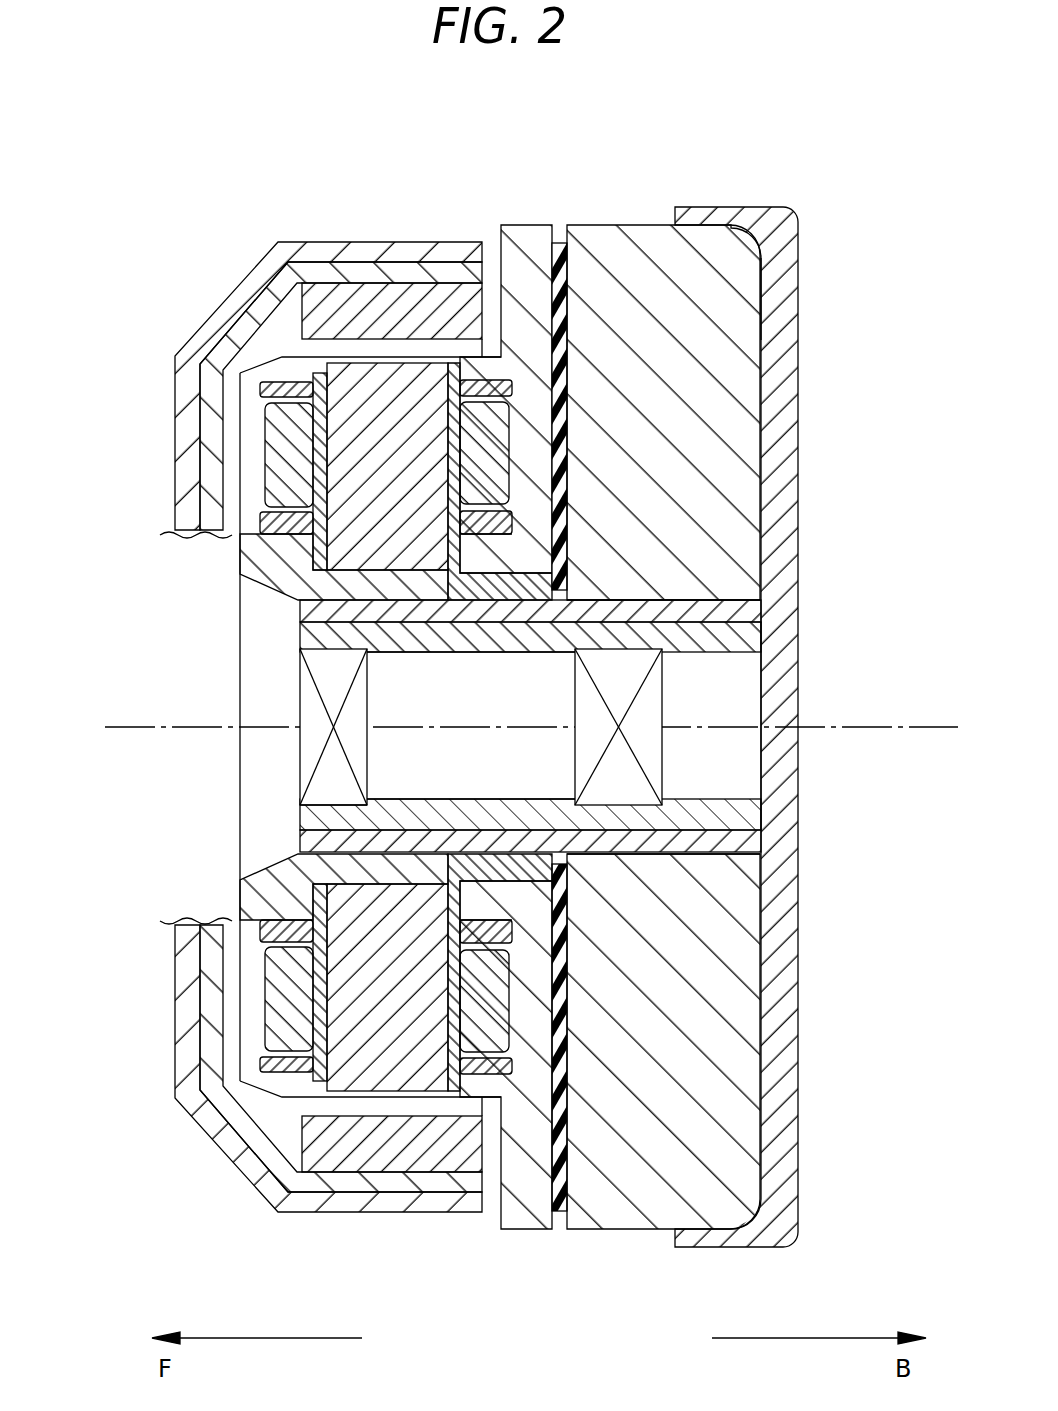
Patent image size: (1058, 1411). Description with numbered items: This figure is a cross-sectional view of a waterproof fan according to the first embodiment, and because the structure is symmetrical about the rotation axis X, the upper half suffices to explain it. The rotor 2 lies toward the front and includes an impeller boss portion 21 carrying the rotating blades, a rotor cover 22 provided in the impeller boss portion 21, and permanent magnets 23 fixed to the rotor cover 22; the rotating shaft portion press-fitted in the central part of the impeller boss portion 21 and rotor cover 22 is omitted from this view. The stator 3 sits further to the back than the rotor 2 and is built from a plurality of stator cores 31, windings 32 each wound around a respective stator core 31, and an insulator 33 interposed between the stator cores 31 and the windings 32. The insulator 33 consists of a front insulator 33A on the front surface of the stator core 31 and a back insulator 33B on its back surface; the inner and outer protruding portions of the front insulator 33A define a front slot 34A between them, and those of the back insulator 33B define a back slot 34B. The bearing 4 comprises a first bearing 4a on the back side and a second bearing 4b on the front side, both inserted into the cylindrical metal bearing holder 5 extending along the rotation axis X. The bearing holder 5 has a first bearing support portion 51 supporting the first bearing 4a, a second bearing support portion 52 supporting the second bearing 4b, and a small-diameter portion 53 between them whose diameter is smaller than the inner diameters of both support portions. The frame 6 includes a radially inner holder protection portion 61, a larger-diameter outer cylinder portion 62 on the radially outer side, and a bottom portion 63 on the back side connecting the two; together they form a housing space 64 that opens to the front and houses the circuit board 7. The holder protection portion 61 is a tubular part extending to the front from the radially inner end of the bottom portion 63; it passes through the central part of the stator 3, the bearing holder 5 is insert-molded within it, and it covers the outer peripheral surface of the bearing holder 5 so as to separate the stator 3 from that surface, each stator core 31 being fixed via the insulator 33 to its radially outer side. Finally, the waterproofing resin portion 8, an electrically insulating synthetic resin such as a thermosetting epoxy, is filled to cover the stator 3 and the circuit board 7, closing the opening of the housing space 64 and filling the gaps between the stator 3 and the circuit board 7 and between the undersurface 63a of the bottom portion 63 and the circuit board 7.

The rotor 2 is at (212, 238).
The impeller boss portion 21 is at (215, 320).
The rotor cover 22 is at (318, 272).
The permanent magnets 23 is at (390, 290).
The stator 3 is at (476, 717).
The stator core 31 is at (330, 572).
The windings 32 is at (270, 442).
The insulator 33 is at (540, 560).
The front insulator 33A is at (272, 532).
The back insulator 33B is at (490, 521).
The front slot 34A is at (292, 394).
The back slot 34B is at (490, 392).
The bearing 4 is at (513, 741).
The first bearing 4a is at (655, 775).
The second bearing 4b is at (317, 792).
The bearing holder 5 is at (610, 726).
The first bearing support portion 51 is at (740, 632).
The second bearing support portion 52 is at (330, 648).
The small-diameter portion 53 is at (510, 655).
The frame 6 is at (790, 664).
The holder protection portion 61 is at (595, 586).
The outer cylinder portion 62 is at (720, 215).
The bottom portion 63 is at (800, 383).
The undersurface 63a is at (766, 328).
The housing space 64 is at (644, 276).
The circuit board 7 is at (560, 280).
The waterproofing resin portion 8 is at (527, 228).
The rotation axis X is at (897, 731).